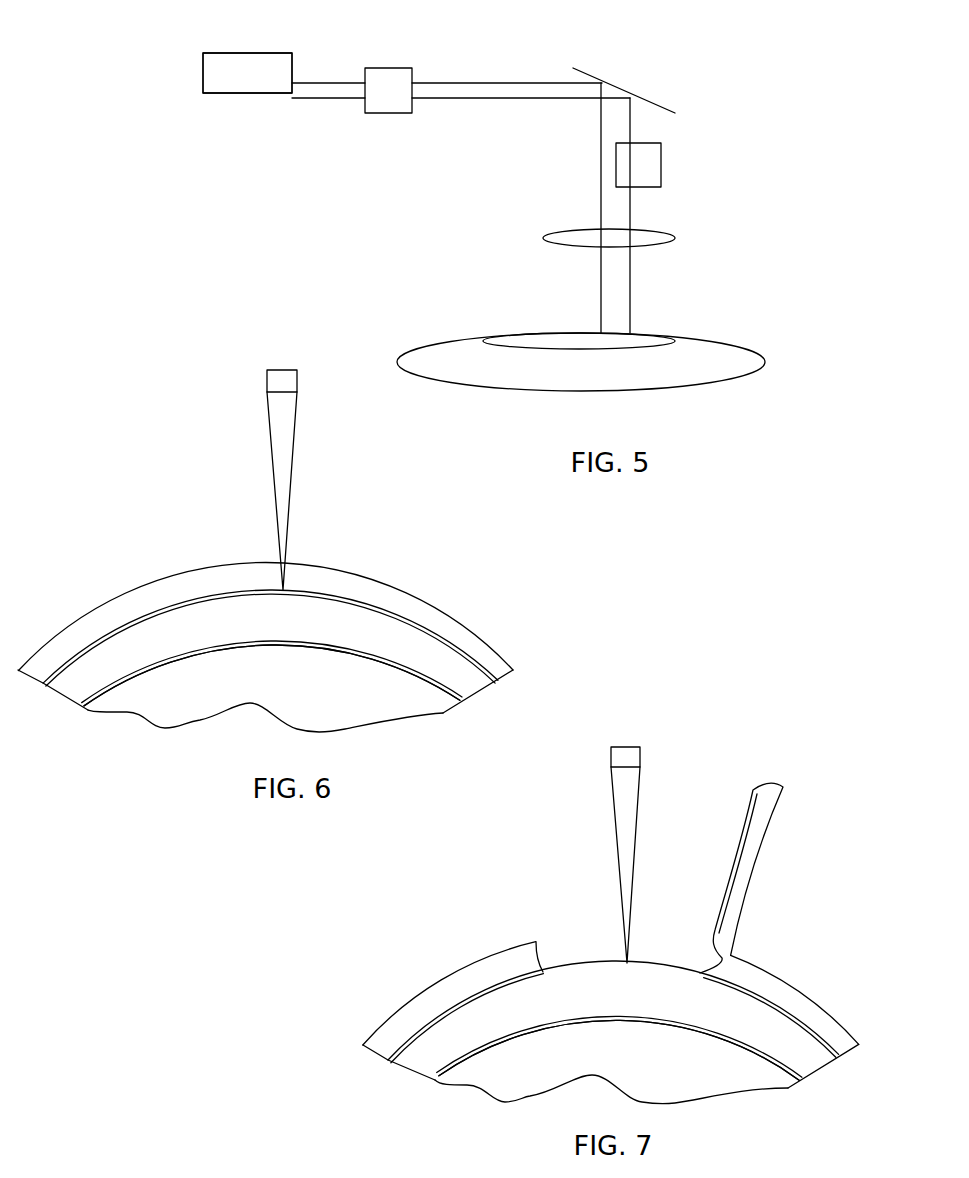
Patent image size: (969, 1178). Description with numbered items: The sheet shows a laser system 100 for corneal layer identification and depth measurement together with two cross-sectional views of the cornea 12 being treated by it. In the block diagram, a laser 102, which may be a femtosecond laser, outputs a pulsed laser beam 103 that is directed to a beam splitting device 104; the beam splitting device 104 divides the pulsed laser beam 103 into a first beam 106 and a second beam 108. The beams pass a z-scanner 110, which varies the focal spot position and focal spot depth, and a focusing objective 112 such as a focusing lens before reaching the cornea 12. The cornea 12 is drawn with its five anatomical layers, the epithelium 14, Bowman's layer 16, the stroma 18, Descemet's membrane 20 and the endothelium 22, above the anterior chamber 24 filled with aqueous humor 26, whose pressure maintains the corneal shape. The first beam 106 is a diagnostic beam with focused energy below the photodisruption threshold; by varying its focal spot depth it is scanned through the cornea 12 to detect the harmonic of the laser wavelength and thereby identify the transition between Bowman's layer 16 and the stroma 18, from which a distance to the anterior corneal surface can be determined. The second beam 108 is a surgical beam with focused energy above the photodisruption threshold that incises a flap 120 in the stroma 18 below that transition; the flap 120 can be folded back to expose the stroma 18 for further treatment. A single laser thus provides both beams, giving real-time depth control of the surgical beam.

In FIG. 5, the laser system 100 is at (677, 53).
In FIG. 5, the laser 102 is at (227, 52).
In FIG. 5, the pulsed laser beam 103 is at (342, 83).
In FIG. 5, the beam splitting device 104 is at (363, 98).
In FIG. 5, the first beam 106 is at (507, 100).
In FIG. 6, the first beam 106 is at (295, 443).
In FIG. 5, the second beam 108 is at (493, 83).
In FIG. 7, the second beam 108 is at (617, 827).
In FIG. 5, the z-scanner 110 is at (657, 143).
In FIG. 5, the focusing objective 112 is at (545, 240).
In FIG. 5, the cornea 12 is at (513, 333).
In FIG. 6, the cornea 12 is at (502, 648).
In FIG. 6, the epithelium 14 is at (432, 602).
In FIG. 7, the epithelium 14 is at (468, 967).
In FIG. 6, the Bowman's layer 16 is at (327, 590).
In FIG. 7, the Bowman's layer 16 is at (470, 990).
In FIG. 6, the stroma 18 is at (333, 622).
In FIG. 7, the stroma 18 is at (603, 995).
In FIG. 6, the Descemet's membrane 20 is at (472, 696).
In FIG. 7, the Descemet's membrane 20 is at (435, 1071).
In FIG. 6, the endothelium 22 is at (437, 695).
In FIG. 7, the endothelium 22 is at (448, 1065).
In FIG. 6, the anterior chamber 24 is at (365, 727).
In FIG. 6, the aqueous humor 26 is at (310, 683).
In FIG. 7, the aqueous humor 26 is at (611, 1075).
In FIG. 7, the flap 120 is at (773, 858).